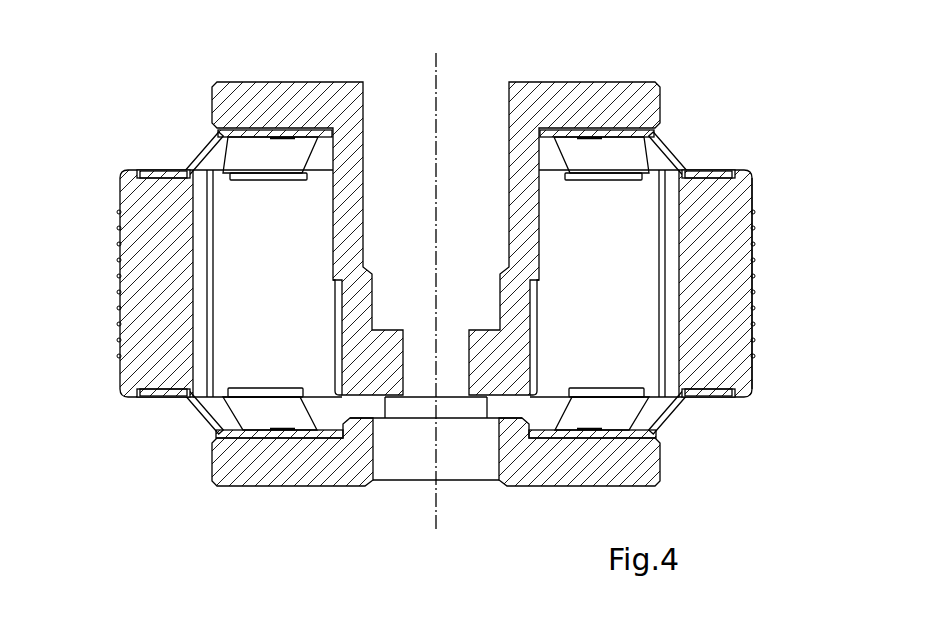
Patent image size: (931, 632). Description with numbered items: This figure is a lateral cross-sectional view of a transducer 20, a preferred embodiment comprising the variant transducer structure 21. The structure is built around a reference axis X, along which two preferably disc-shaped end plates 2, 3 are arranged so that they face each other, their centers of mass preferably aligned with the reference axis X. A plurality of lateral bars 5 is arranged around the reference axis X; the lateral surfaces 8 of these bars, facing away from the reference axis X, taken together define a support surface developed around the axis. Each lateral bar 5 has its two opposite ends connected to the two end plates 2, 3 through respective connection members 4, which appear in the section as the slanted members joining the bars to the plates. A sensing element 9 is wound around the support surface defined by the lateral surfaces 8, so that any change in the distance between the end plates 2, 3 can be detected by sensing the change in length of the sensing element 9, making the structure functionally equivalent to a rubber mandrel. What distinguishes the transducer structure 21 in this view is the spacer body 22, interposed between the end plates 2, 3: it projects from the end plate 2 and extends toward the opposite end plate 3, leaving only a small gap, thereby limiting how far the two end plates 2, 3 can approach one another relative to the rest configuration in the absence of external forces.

The transducer 20 is at (160, 95).
The end plate 2 is at (275, 95).
The spacer body 22 is at (345, 232).
The transducer structure 21 is at (660, 82).
The connection member 4 is at (682, 147).
The lateral bar 5 is at (722, 205).
The sensing element 9 is at (757, 243).
The lateral surface 8 is at (757, 372).
The end plate 3 is at (640, 462).
The reference axis X is at (437, 58).